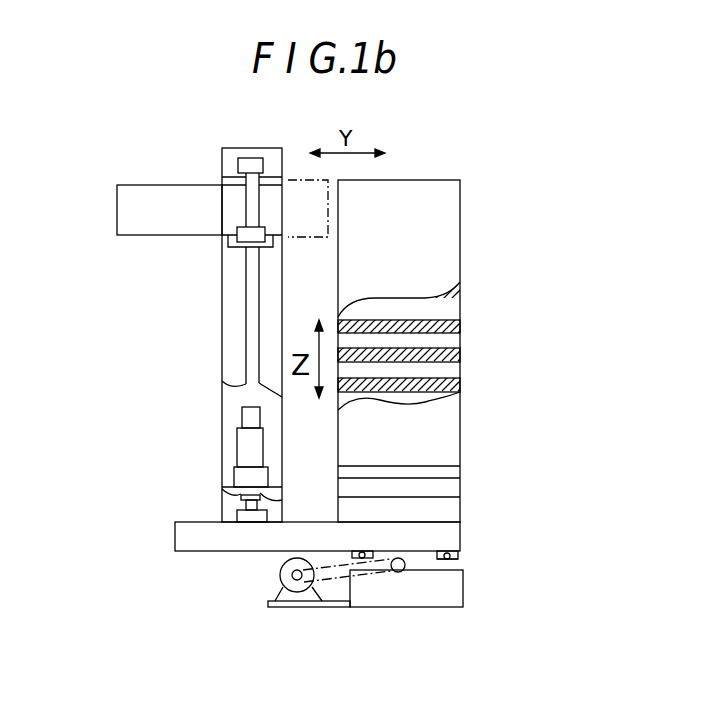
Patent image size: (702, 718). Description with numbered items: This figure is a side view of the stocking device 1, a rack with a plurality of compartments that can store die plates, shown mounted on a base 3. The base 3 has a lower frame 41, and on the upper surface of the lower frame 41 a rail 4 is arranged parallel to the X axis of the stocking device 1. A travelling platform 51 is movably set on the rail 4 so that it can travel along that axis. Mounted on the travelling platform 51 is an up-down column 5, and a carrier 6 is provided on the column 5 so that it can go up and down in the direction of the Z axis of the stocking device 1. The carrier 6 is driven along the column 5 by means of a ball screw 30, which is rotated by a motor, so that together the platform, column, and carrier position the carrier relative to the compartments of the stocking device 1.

The stocking device 1 is at (462, 231).
The base 3 is at (473, 475).
The rail 4 is at (455, 607).
The lower frame 41 is at (390, 593).
The up-down column 5 is at (232, 397).
The travelling platform 51 is at (203, 543).
The carrier 6 is at (142, 183).
The ball screw 30 is at (253, 282).